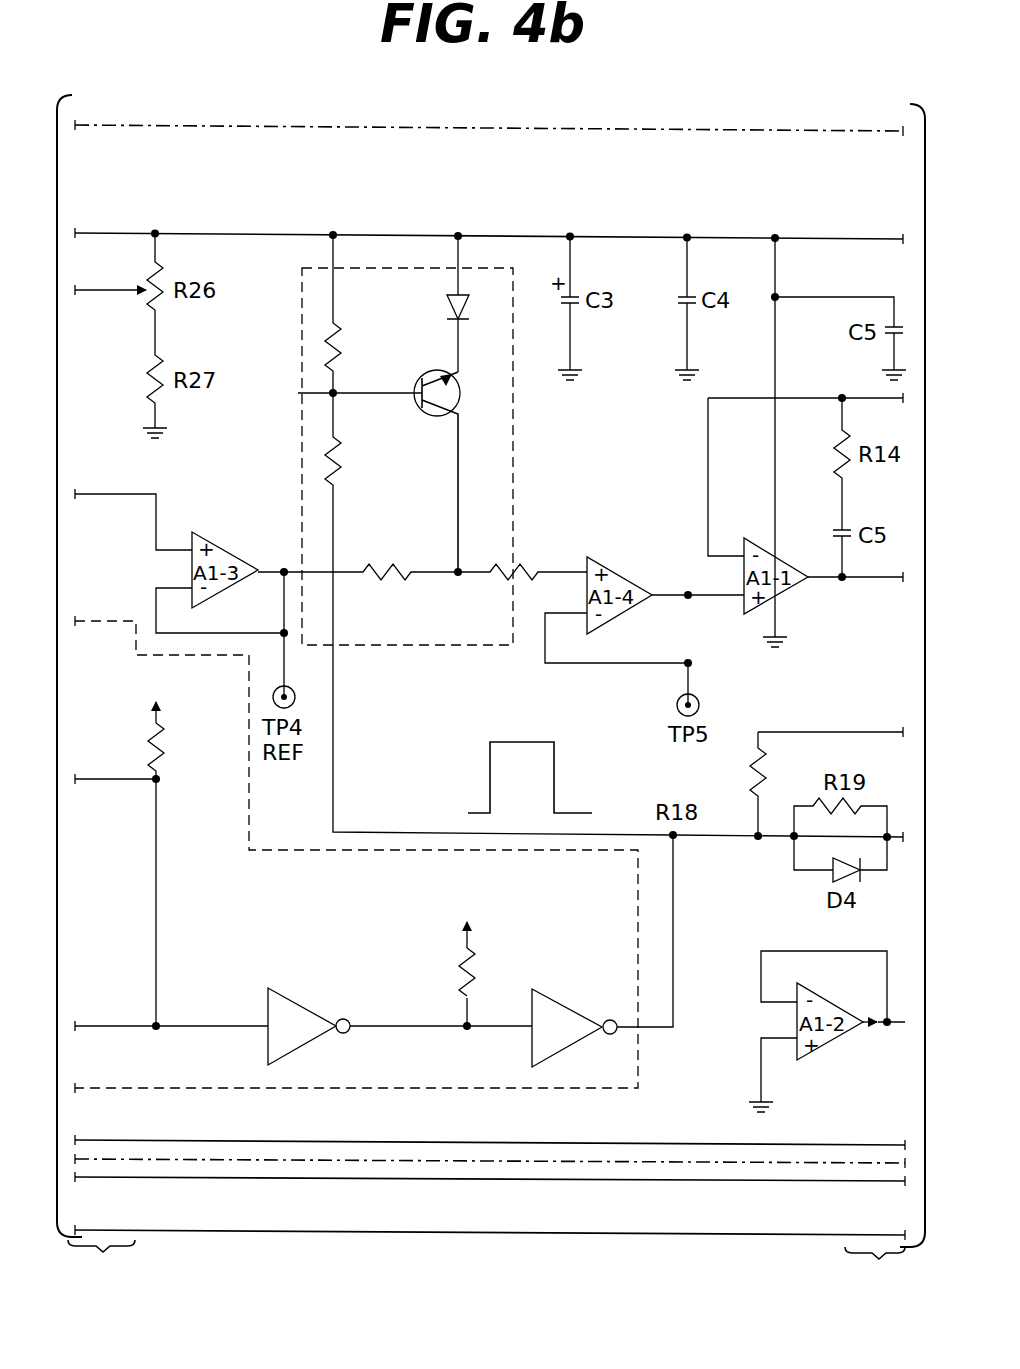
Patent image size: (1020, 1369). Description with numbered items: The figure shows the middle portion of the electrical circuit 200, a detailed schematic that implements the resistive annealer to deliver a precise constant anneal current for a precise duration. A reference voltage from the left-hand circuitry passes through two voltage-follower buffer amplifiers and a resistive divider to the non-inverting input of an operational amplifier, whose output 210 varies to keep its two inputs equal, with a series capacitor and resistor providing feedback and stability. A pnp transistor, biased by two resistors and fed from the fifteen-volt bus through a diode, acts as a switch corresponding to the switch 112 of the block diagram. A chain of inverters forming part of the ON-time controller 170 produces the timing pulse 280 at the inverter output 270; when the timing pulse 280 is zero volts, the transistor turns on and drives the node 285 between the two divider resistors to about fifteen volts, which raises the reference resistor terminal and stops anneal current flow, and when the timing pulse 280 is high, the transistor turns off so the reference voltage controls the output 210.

The switch 112 is at (513, 438).
The node 285 is at (455, 578).
The timing pulse 280 is at (556, 752).
The output of op amp A1-1 210 is at (862, 579).
The inverter output 270 is at (655, 1029).
The ON-time controller 170 is at (355, 1092).
The electrical circuit 200 is at (380, 1250).